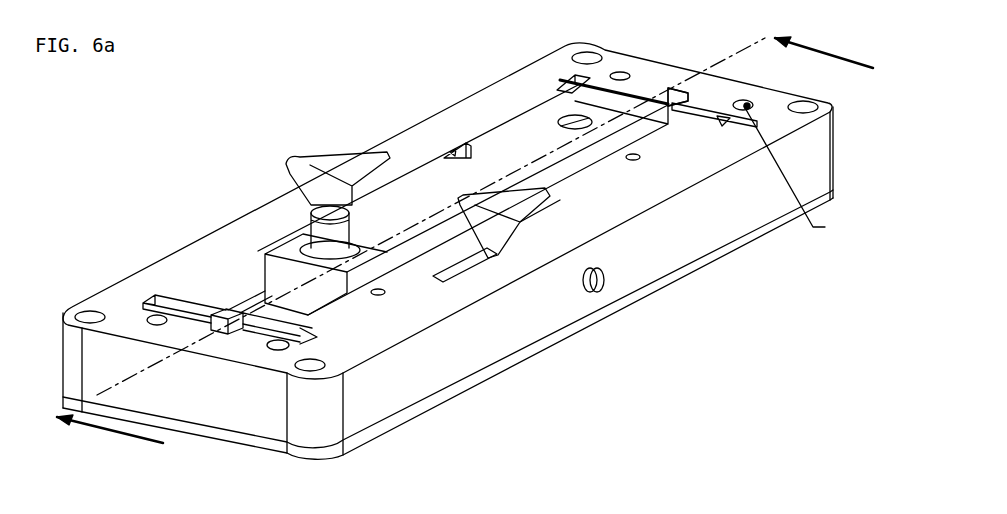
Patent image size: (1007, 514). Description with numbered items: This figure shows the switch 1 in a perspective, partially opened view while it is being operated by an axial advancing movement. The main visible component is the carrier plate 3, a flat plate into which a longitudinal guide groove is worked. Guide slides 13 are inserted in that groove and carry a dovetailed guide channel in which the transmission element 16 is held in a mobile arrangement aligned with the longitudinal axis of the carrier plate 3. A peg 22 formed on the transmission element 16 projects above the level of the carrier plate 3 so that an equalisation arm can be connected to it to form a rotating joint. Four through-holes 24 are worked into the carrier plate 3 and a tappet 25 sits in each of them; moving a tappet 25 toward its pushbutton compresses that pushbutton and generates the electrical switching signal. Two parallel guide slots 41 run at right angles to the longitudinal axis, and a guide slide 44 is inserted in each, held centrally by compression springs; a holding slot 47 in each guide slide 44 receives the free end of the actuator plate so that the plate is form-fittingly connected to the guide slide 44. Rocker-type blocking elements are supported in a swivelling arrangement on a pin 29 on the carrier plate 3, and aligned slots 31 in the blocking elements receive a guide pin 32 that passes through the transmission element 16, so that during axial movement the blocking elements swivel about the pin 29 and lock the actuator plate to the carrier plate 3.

The switch 1 is at (250, 43).
The carrier plate 3 is at (400, 377).
The guide slide 13 is at (262, 298).
The transmission element 16 is at (403, 213).
The peg 22 is at (327, 233).
The through-hole 24 is at (502, 225).
The tappet 25 is at (748, 108).
The pin 29 is at (595, 280).
The slot 31 is at (558, 200).
The guide pin 32 is at (402, 170).
The guide slot 41 is at (450, 152).
The guide slide 44 is at (688, 110).
The holding slot 47 is at (228, 312).